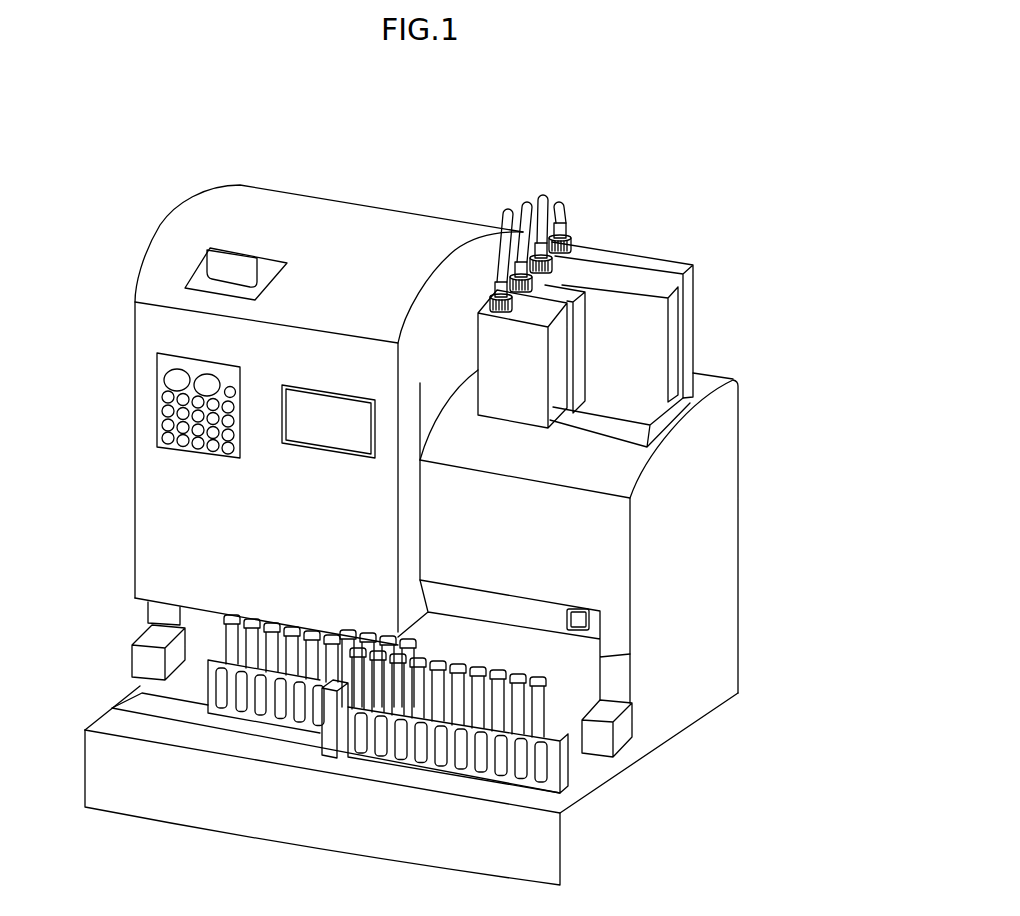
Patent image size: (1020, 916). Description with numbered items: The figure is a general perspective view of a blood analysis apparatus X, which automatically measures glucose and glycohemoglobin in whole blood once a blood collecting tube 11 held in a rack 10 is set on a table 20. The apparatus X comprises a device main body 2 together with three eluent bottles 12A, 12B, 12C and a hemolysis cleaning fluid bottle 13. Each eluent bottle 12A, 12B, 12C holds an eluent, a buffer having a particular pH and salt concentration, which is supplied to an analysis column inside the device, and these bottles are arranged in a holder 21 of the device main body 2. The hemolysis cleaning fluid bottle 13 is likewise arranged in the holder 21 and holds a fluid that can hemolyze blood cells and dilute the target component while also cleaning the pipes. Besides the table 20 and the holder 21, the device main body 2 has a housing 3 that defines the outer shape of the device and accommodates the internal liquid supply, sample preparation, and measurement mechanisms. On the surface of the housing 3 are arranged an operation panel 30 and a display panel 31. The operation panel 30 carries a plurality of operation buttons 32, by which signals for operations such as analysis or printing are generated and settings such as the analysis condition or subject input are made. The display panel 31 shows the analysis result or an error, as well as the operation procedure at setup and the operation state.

The blood analysis apparatus X is at (679, 238).
The device main body 2 is at (735, 478).
The housing 3 is at (722, 573).
The rack 10 is at (207, 682).
The blood collecting tube 11 is at (228, 634).
The eluent bottle 12A is at (557, 393).
The eluent bottle 12B is at (580, 352).
The eluent bottle 12C is at (673, 368).
The hemolysis cleaning fluid bottle 13 is at (692, 316).
The table 20 is at (243, 733).
The holder 21 is at (640, 410).
The operation panel 30 is at (183, 424).
The display panel 31 is at (342, 405).
The operation button 32 is at (229, 413).